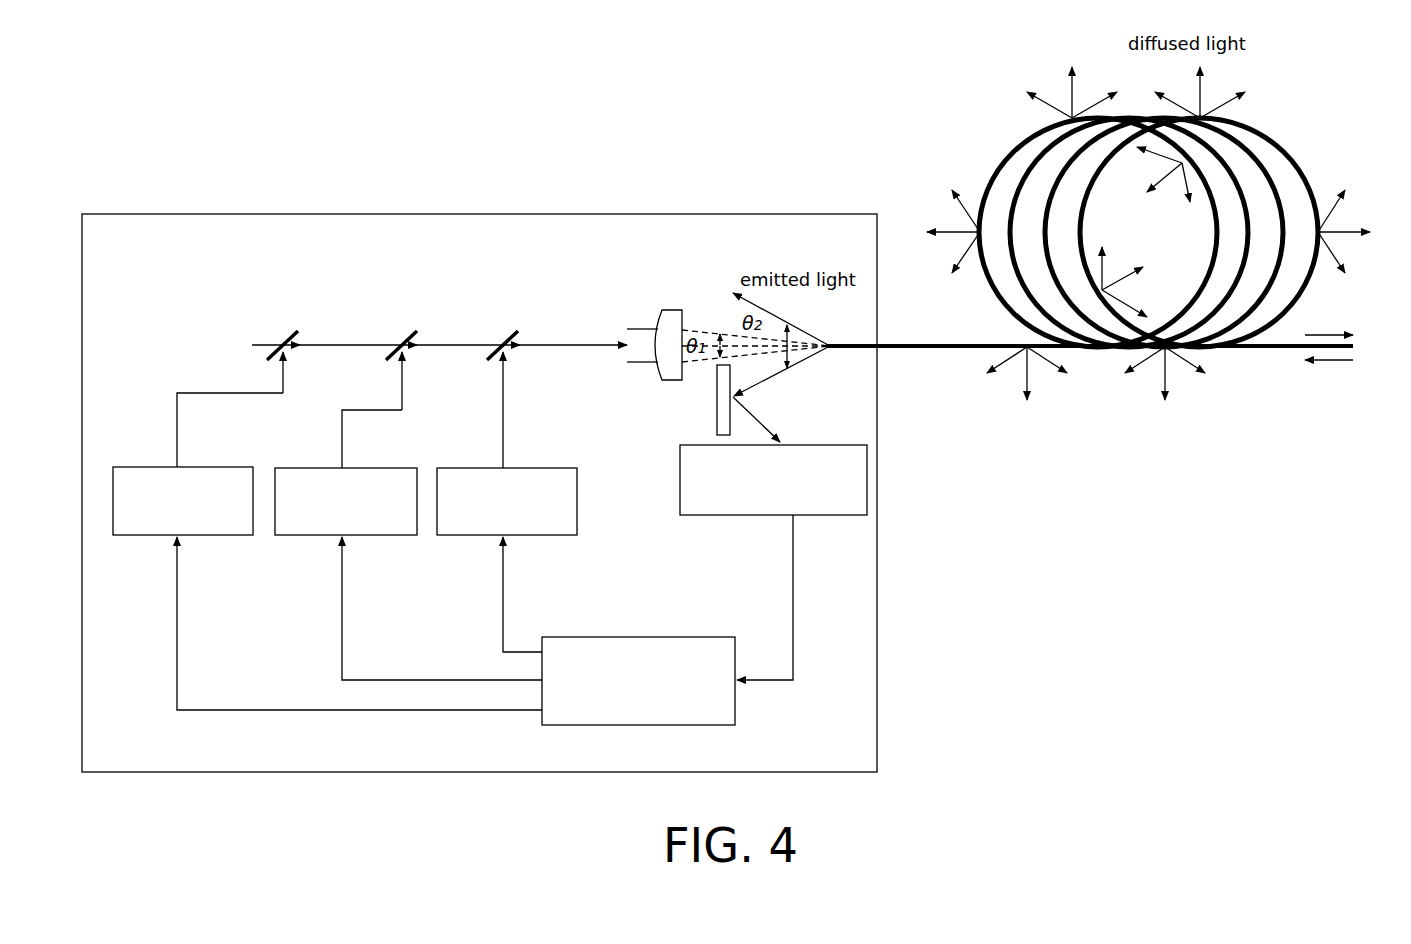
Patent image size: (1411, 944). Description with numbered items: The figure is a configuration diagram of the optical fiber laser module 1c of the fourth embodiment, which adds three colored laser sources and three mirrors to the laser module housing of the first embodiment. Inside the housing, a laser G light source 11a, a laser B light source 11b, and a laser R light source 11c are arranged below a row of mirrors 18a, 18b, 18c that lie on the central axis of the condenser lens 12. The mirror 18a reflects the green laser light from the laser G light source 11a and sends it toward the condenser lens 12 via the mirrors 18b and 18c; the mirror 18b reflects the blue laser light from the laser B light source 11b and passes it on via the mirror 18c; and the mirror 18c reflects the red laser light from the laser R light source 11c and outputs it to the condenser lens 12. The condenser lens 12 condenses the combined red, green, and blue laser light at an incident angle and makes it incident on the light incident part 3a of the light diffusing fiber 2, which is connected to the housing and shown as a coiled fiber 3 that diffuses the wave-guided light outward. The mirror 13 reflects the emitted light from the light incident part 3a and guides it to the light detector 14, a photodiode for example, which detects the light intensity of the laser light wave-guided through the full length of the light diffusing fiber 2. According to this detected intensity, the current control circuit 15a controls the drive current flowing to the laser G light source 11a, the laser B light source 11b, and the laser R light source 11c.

The optical fiber laser module 1c is at (470, 214).
The light diffusing fiber 2 is at (1000, 160).
The optical fiber 3 is at (1353, 346).
The light incident part 3a is at (832, 350).
The laser G light source 11a is at (150, 535).
The laser B light source 11b is at (305, 535).
The laser R light source 11c is at (462, 535).
The condenser lens 12 is at (672, 310).
The mirror 13 is at (717, 425).
The light detector 14 is at (680, 493).
The current control circuit 15a is at (654, 637).
The mirror 18a is at (286, 333).
The mirror 18b is at (405, 333).
The mirror 18c is at (506, 333).